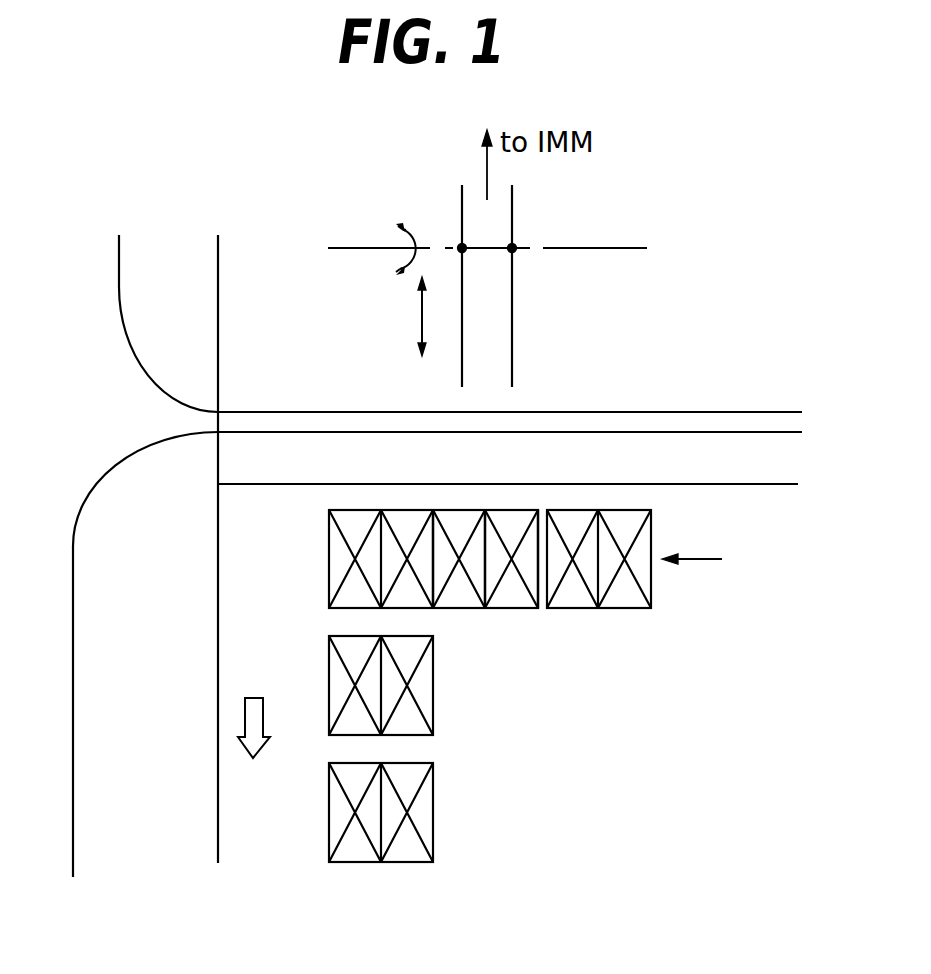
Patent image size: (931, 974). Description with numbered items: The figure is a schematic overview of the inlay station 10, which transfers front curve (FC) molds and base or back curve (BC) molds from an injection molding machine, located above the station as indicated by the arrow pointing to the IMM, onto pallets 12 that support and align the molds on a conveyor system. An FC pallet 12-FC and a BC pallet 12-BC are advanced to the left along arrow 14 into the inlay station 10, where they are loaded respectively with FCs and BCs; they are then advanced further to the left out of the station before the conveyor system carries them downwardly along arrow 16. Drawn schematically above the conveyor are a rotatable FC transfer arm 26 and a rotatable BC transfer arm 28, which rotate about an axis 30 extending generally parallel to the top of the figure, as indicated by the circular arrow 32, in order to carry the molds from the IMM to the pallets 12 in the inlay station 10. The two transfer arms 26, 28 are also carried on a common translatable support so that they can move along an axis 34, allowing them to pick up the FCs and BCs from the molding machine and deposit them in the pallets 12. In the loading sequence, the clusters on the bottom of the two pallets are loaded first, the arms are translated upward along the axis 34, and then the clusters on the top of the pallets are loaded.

The inlay station 10 is at (537, 505).
The pallets 12 is at (407, 512).
The FC pallet 12-FC is at (463, 607).
The BC pallet 12-BC is at (520, 605).
The arrow 14 is at (697, 558).
The arrow 16 is at (263, 718).
The FC transfer arm 26 is at (461, 203).
The BC transfer arm 28 is at (513, 213).
The axis 30 is at (340, 250).
The circular arrow 32 is at (417, 232).
The axis 34 is at (422, 316).